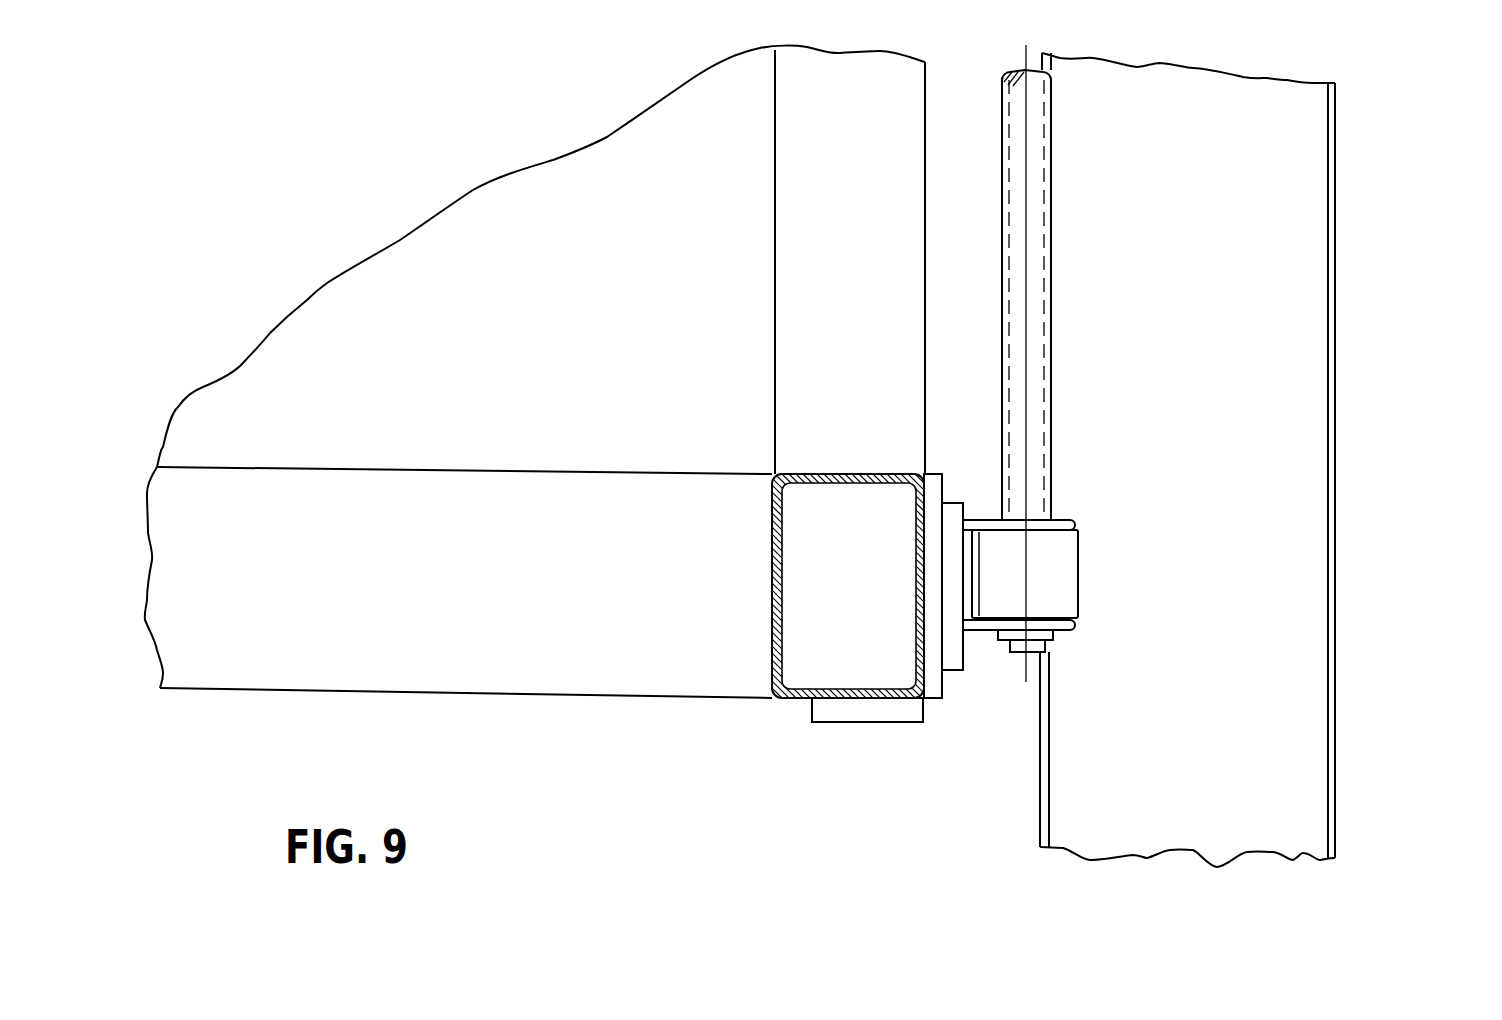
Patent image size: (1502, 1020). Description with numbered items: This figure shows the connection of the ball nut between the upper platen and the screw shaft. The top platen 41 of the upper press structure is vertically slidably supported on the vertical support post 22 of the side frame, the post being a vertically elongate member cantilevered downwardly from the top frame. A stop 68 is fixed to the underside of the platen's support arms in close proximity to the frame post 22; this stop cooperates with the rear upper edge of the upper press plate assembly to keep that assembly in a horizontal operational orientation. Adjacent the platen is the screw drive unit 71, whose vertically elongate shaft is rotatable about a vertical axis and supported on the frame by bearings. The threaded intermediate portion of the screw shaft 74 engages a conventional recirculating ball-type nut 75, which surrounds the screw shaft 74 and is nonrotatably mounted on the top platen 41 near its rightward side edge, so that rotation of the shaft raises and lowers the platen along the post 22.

The top platen 41 is at (394, 238).
The stop 68 is at (850, 707).
The screw drive unit 71 is at (1055, 148).
The screw shaft 74 is at (1035, 200).
The recirculating ball-type nut 75 is at (1053, 593).
The support post 22 is at (1313, 307).